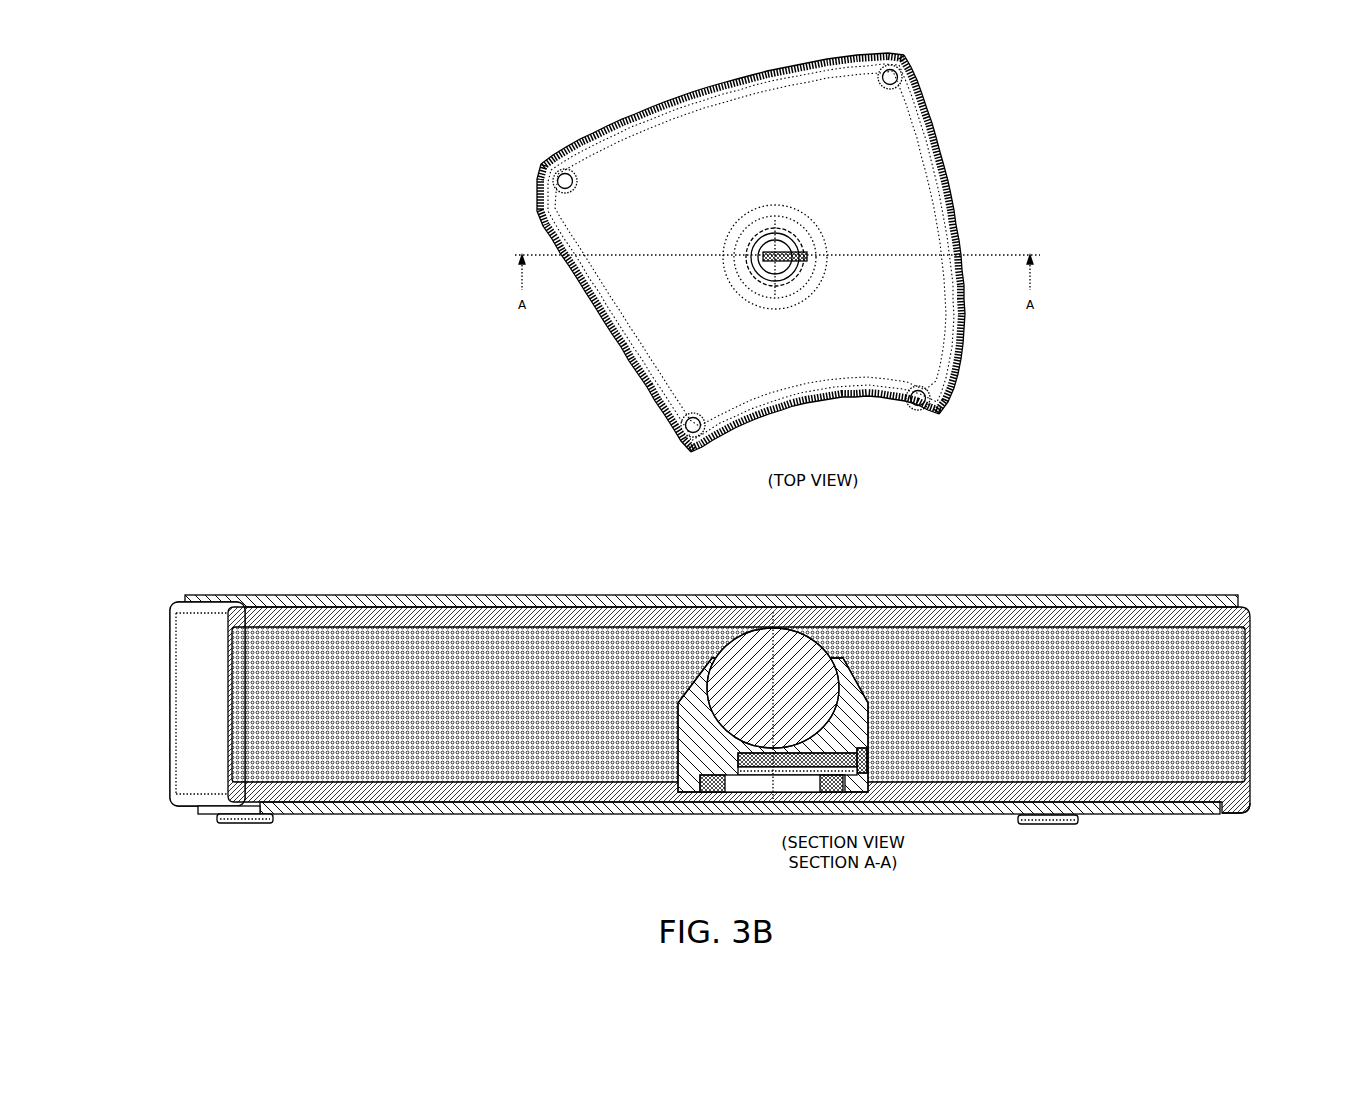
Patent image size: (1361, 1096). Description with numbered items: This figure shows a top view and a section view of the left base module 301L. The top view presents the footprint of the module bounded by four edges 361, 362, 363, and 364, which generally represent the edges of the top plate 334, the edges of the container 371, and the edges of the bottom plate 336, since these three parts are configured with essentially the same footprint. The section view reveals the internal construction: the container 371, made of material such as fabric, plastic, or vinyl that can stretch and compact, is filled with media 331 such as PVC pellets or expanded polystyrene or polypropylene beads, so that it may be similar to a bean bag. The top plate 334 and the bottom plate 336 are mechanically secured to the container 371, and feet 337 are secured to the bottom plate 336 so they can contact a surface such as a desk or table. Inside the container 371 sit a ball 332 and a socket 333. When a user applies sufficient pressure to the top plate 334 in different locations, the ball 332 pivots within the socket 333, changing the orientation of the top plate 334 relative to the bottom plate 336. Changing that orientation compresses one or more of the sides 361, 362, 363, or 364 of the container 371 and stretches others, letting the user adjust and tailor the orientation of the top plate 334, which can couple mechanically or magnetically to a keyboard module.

The left base module 301L is at (795, 178).
The media 331 is at (1213, 672).
The ball 332 is at (797, 650).
The socket 333 is at (707, 740).
The top plate 334 is at (303, 595).
The bottom plate 336 is at (390, 815).
The feet 337 is at (268, 827).
The edge 361 is at (608, 328).
The edge 362 is at (826, 407).
The edge 363 is at (968, 213).
The edge 364 is at (777, 66).
The container 371 is at (267, 732).